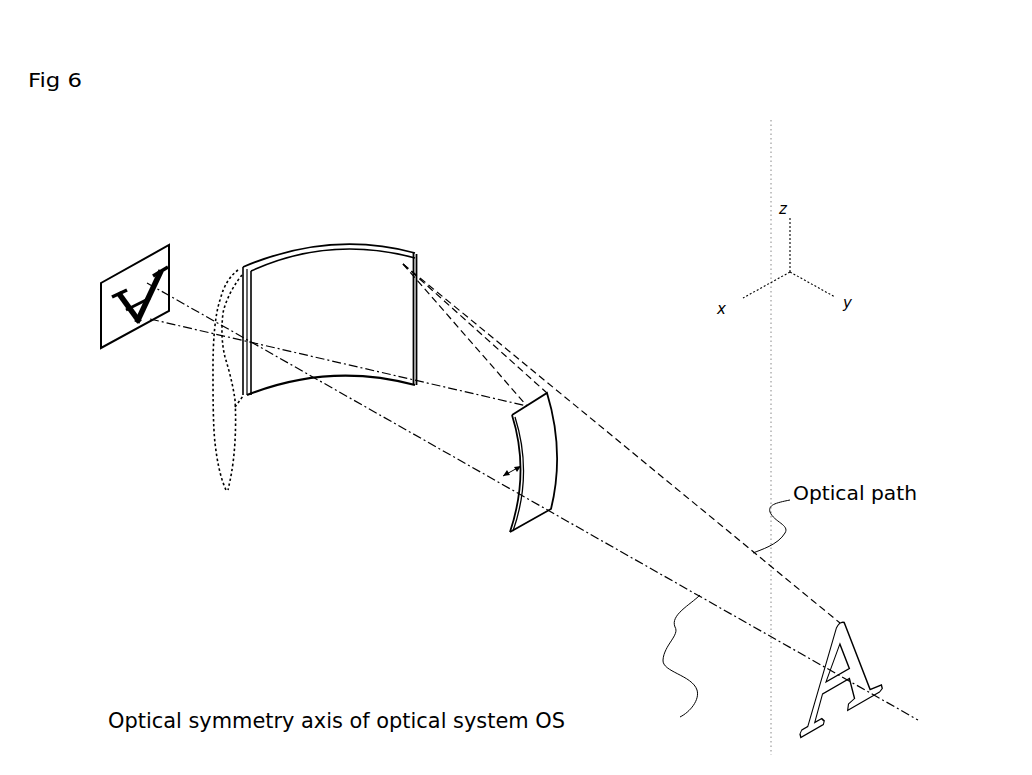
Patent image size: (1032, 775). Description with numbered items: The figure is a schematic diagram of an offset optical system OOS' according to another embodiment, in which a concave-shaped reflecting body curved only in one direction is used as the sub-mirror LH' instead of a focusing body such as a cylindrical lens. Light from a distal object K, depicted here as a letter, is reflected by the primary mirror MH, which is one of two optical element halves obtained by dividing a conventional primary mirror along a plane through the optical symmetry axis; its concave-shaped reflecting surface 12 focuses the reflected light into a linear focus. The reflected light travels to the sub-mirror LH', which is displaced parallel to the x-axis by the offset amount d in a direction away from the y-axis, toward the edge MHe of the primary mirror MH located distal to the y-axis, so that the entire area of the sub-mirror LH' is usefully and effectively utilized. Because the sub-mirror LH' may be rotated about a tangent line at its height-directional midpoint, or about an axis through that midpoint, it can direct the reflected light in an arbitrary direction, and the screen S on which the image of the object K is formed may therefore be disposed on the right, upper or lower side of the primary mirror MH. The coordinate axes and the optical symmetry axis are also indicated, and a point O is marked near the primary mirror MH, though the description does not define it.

The primary mirror MH is at (335, 243).
The reflecting surface 12 is at (347, 278).
The origin of mirror O is at (247, 337).
The edge of the primary mirror MHe is at (417, 350).
The screen S is at (122, 322).
The offset amount d is at (500, 468).
The sub-mirror LH' is at (474, 510).
The distal object K is at (850, 657).
The offset optical system OOS' is at (471, 380).